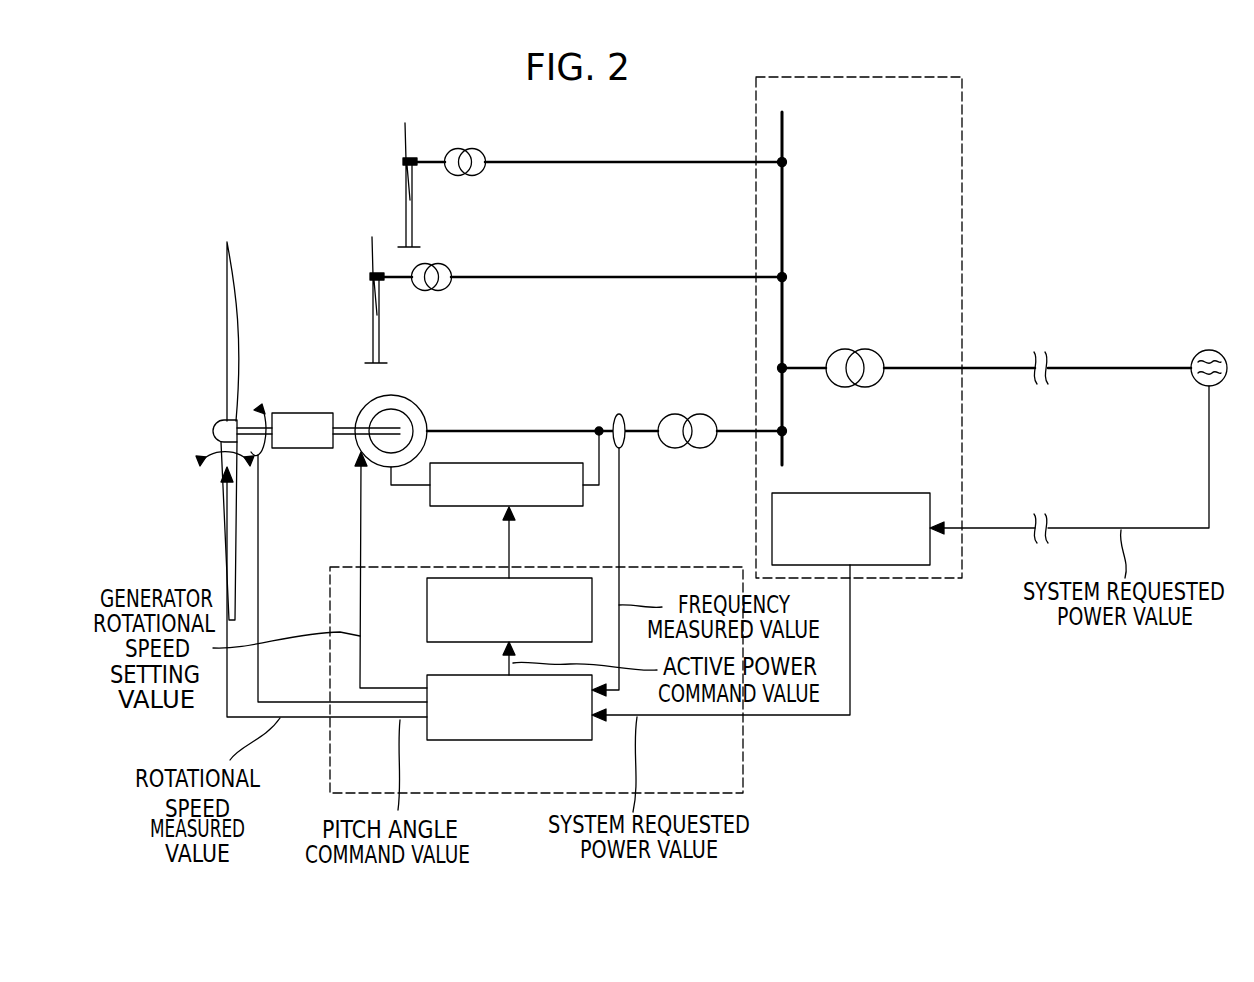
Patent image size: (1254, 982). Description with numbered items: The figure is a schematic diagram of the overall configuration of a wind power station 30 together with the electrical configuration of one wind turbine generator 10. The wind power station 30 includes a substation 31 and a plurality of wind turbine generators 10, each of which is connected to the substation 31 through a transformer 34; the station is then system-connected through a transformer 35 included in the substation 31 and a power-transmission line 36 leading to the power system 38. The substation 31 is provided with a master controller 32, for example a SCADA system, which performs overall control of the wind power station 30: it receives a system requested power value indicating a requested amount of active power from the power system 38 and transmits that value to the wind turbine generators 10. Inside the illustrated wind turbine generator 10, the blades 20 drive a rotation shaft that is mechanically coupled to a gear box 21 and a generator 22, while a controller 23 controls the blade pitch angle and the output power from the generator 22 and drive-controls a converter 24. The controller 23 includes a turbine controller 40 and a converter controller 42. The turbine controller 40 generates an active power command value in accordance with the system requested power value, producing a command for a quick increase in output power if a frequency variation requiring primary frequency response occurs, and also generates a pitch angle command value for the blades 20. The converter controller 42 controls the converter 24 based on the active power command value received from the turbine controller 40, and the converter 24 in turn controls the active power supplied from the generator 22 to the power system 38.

The wind turbine generator 10 is at (286, 344).
The blades 20 is at (228, 367).
The gear box 21 is at (300, 412).
The generator 22 is at (427, 414).
The controller 23 is at (743, 752).
The converter 24 is at (530, 508).
The wind power station 30 is at (652, 116).
The substation 31 is at (963, 110).
The master controller 32 is at (850, 493).
The transformer 34 is at (470, 148).
The transformer 35 is at (860, 349).
The power-transmission line 36 is at (1007, 360).
The power system 38 is at (1209, 350).
The turbine controller 40 is at (505, 742).
The converter controller 42 is at (427, 610).